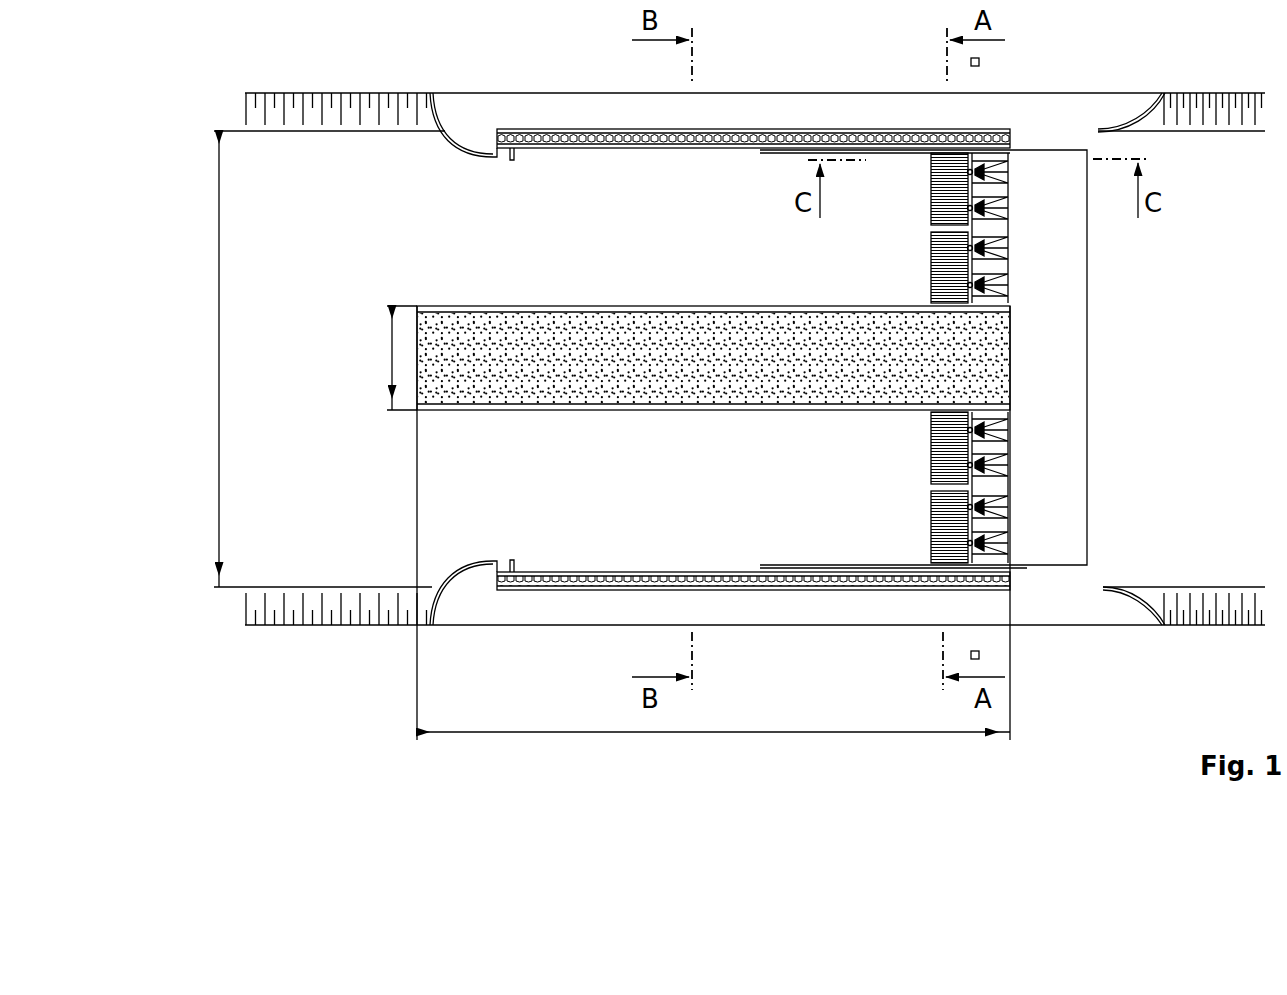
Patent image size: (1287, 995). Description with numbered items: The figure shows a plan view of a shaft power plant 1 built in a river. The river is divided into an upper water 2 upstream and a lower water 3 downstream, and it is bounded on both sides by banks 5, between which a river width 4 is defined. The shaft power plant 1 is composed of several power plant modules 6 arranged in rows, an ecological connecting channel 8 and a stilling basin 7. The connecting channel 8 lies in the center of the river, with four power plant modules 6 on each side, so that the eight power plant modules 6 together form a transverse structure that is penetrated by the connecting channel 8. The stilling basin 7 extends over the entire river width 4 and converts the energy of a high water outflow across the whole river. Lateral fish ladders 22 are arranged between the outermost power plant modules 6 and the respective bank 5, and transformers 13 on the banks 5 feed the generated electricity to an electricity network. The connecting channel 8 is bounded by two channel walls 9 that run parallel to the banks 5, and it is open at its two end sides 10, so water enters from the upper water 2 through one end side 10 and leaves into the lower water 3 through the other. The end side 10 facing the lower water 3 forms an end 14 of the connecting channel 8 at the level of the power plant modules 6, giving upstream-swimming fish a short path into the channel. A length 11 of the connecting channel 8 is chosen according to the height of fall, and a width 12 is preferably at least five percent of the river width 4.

The shaft power plant 1 is at (192, 194).
The upper water 2 is at (339, 229).
The lower water 3 is at (1196, 325).
The river width 4 is at (217, 358).
The bank 5 is at (268, 93).
The power plant module 6 is at (926, 170).
The stilling basin 7 is at (1073, 483).
The ecological connecting channel 8 is at (561, 316).
The channel wall 9 is at (637, 305).
The end side 10 is at (358, 325).
The length 11 is at (796, 734).
The width 12 is at (388, 358).
The transformer 13 is at (980, 62).
The end 14 is at (1022, 308).
The lateral fish ladder 22 is at (583, 149).